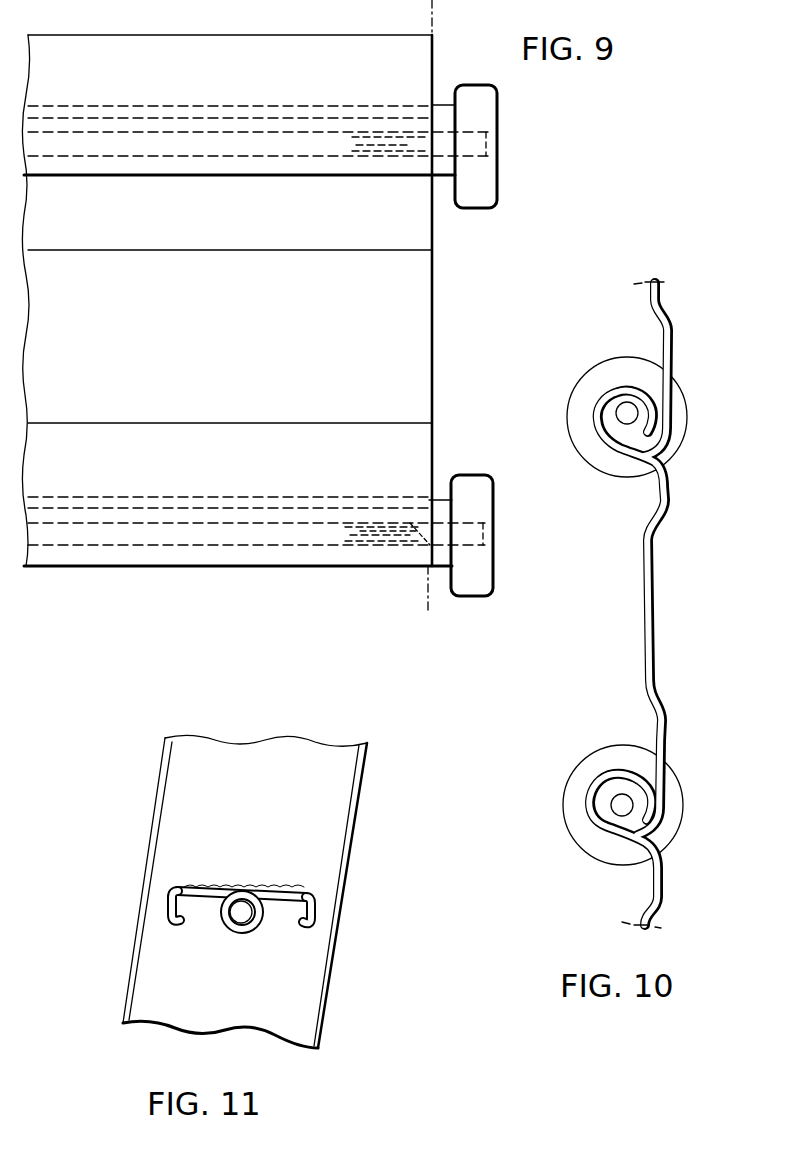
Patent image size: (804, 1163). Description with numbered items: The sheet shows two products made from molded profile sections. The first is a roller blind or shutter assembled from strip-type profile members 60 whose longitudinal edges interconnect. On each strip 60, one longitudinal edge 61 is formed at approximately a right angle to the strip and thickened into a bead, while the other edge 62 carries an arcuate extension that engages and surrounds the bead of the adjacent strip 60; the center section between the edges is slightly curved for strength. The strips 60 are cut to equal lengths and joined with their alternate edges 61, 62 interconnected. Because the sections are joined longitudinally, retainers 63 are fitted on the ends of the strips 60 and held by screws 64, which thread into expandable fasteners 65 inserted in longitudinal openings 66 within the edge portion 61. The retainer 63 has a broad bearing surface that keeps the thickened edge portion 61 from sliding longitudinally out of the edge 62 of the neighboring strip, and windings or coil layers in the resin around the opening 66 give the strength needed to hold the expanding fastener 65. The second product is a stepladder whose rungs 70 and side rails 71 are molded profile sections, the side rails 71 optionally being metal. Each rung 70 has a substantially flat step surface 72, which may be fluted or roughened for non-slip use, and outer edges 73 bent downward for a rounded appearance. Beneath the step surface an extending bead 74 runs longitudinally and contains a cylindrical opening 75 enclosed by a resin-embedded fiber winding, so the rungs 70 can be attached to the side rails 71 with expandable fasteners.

In FIG. 10, the strip-type profile member 60 is at (665, 300).
In FIG. 9, the longitudinal edge 61 is at (416, 520).
In FIG. 10, the longitudinal edge 61 is at (625, 822).
In FIG. 9, the other edge 62 is at (382, 520).
In FIG. 10, the other edge 62 is at (607, 440).
In FIG. 9, the retainer 63 is at (477, 190).
In FIG. 9, the screw 64 is at (492, 153).
In FIG. 9, the expandable fastener 65 is at (400, 135).
In FIG. 10, the longitudinal opening 66 is at (625, 408).
In FIG. 11, the rung 70 is at (227, 922).
In FIG. 11, the side rail 71 is at (342, 792).
In FIG. 11, the step surface 72 is at (201, 885).
In FIG. 11, the outer edge 73 is at (172, 908).
In FIG. 11, the extending bead 74 is at (240, 932).
In FIG. 11, the cylindrical opening 75 is at (235, 912).